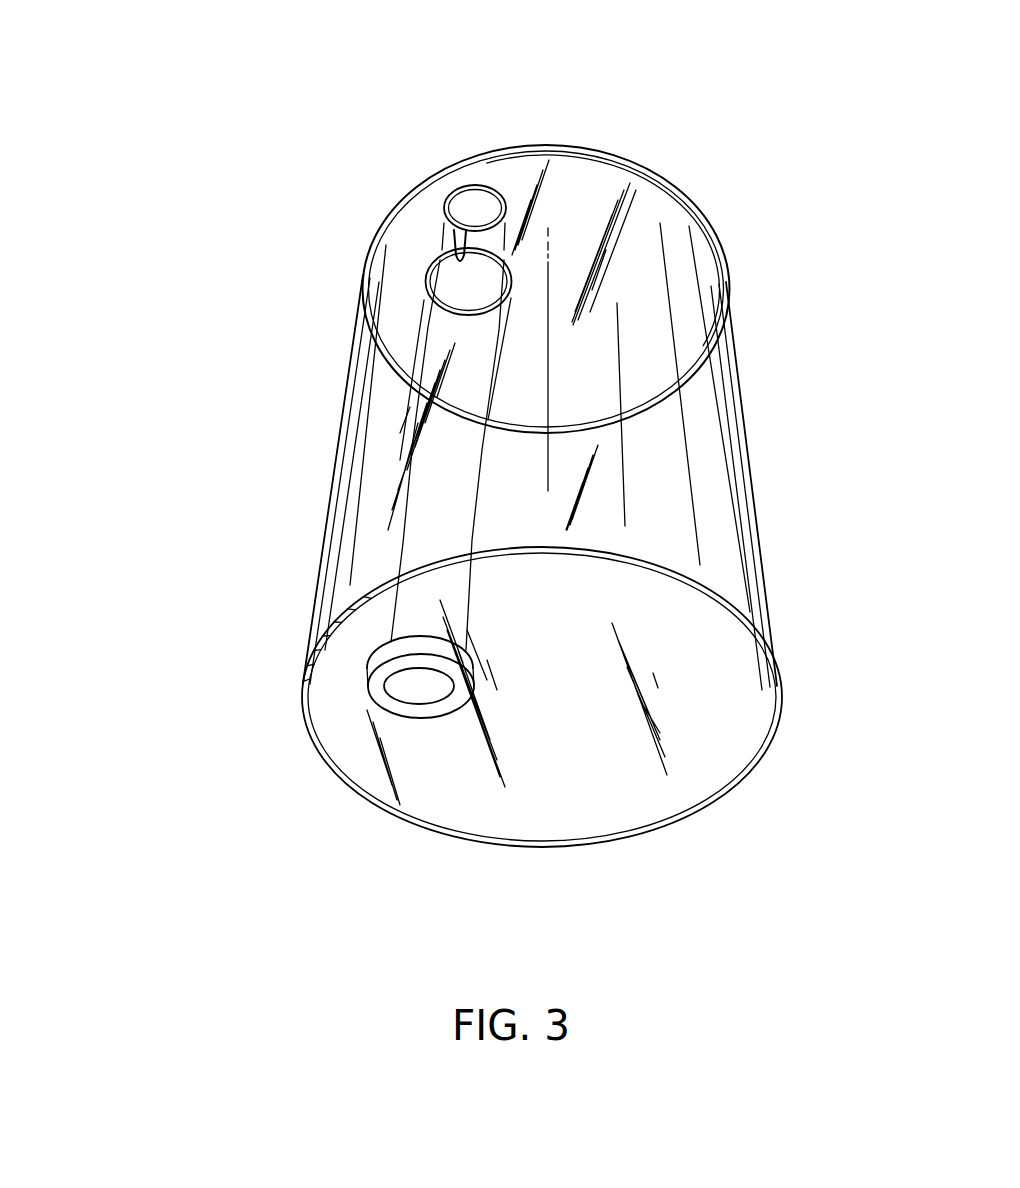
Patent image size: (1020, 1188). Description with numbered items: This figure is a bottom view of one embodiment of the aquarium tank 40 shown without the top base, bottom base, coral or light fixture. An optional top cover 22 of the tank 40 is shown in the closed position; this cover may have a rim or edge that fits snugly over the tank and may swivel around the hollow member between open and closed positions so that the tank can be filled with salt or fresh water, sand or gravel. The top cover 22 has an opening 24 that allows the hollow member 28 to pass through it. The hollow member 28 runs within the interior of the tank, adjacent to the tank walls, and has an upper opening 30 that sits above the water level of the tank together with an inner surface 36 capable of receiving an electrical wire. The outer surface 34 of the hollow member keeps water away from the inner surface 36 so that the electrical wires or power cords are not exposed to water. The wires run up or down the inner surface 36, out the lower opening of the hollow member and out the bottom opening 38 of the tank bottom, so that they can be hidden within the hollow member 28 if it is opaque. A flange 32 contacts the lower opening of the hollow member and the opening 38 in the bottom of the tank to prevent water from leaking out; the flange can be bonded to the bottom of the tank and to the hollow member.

The top cover 22 is at (660, 228).
The opening 24 is at (430, 277).
The hollow member 28 is at (430, 497).
The upper opening 30 is at (471, 205).
The flange 32 is at (442, 720).
The outer surface 34 is at (400, 547).
The inner surface 36 is at (444, 188).
The bottom opening of tank bottom 38 is at (414, 688).
The tank 40 is at (720, 436).